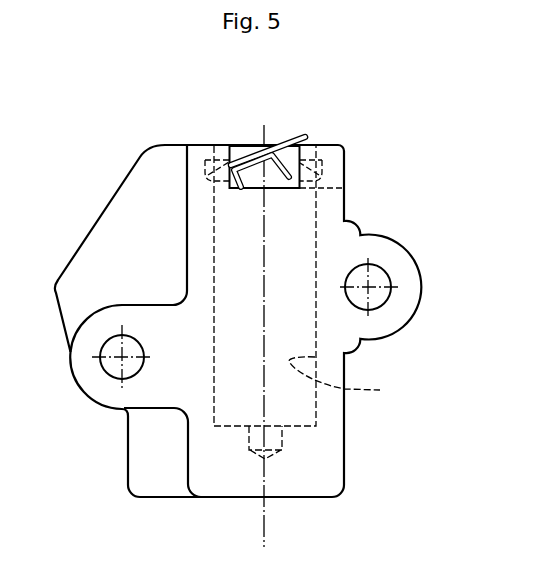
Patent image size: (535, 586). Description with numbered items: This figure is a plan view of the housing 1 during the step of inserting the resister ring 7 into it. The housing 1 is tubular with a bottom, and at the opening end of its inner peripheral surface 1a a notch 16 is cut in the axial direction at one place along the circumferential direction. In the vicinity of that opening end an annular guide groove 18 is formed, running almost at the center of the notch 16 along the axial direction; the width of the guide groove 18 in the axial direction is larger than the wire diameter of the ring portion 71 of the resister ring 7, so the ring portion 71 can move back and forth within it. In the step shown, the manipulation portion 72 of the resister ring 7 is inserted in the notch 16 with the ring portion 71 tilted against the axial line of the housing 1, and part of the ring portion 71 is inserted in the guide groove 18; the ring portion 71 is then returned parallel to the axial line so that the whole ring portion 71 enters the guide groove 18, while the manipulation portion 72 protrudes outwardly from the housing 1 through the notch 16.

The housing 1 is at (95, 403).
The inner peripheral surface 1a is at (352, 381).
The resister ring 7 is at (333, 150).
The notch 16 is at (242, 140).
The guide groove 18 is at (345, 188).
The ring portion 71 is at (307, 138).
The manipulation portion 72 is at (262, 163).